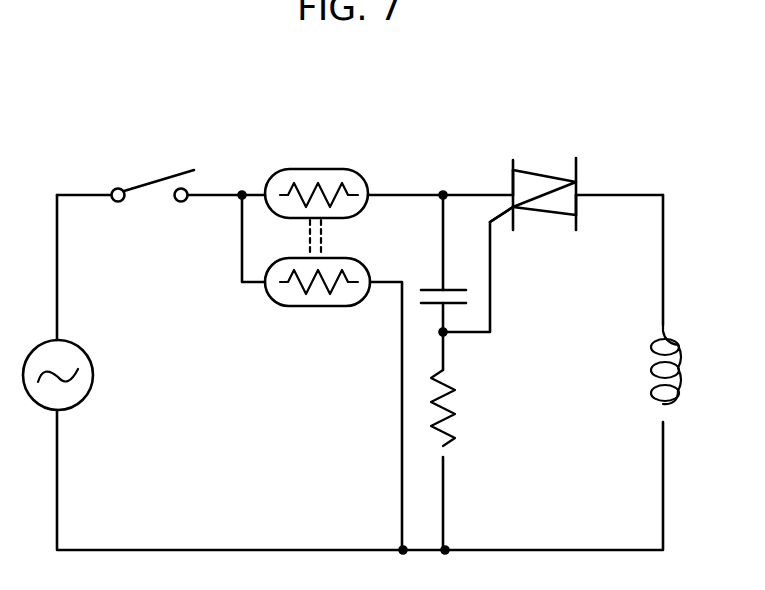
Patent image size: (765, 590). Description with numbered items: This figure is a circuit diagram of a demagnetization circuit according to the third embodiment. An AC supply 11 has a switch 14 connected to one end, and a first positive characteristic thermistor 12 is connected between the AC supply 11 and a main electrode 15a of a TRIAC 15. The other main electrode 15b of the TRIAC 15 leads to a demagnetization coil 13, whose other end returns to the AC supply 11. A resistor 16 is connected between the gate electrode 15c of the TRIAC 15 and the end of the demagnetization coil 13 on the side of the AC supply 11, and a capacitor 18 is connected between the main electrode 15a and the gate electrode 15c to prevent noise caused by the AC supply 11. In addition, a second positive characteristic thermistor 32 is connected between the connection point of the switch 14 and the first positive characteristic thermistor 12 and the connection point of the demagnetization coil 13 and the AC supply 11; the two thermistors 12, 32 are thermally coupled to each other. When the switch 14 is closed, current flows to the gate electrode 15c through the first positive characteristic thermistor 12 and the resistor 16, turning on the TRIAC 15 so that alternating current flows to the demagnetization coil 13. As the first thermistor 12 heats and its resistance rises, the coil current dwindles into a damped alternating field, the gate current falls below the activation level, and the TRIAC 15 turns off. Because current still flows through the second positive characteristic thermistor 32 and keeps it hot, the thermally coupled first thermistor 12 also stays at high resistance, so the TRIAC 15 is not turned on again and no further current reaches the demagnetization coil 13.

The AC supply 11 is at (107, 337).
The first positive characteristic thermistor 12 is at (318, 168).
The demagnetization coil 13 is at (676, 394).
The switch 14 is at (166, 173).
The TRIAC 15 is at (541, 148).
The main electrode 15a is at (512, 195).
The main electrode 15b is at (578, 191).
The gate electrode 15c is at (512, 213).
The resistor 16 is at (456, 423).
The capacitor 18 is at (462, 290).
The second positive characteristic thermistor 32 is at (308, 308).